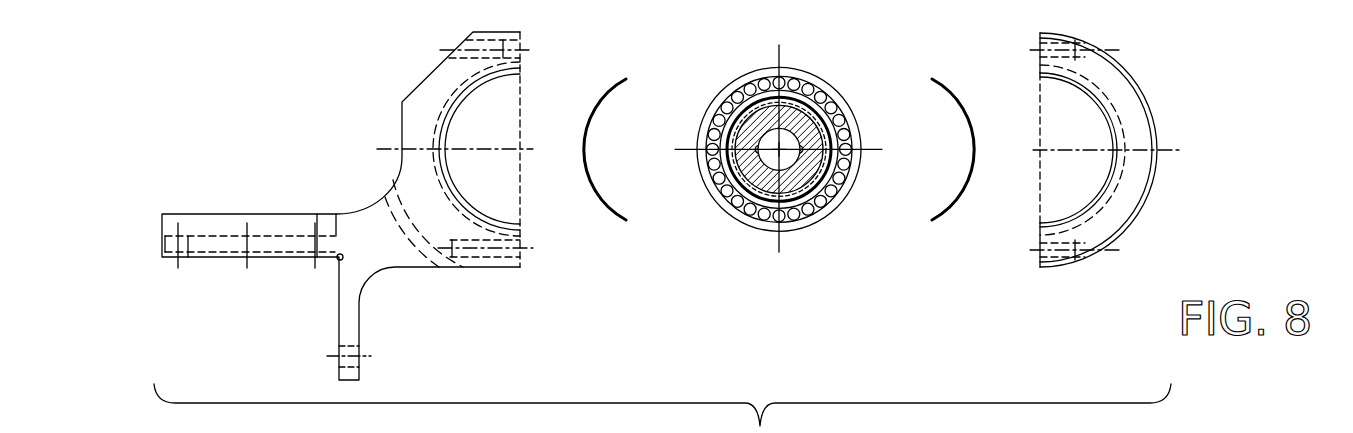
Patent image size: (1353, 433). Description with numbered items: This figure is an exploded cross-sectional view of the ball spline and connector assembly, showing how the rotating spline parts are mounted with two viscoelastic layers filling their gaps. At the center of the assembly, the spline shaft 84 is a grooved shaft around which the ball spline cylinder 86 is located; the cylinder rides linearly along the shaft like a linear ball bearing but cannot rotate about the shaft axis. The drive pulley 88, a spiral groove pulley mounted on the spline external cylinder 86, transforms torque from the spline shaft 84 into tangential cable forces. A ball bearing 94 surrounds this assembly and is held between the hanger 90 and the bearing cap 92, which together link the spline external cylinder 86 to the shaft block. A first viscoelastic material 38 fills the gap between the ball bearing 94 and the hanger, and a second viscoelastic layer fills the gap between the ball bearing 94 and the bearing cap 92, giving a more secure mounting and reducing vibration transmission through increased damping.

The first viscoelastic material 38 is at (613, 217).
The spline shaft 84 is at (810, 125).
The ball spline cylinder 86 is at (808, 163).
The drive pulley 88 is at (755, 110).
The hanger 90 is at (390, 258).
The bearing cap 92 is at (1135, 190).
The ball bearing 94 is at (808, 217).